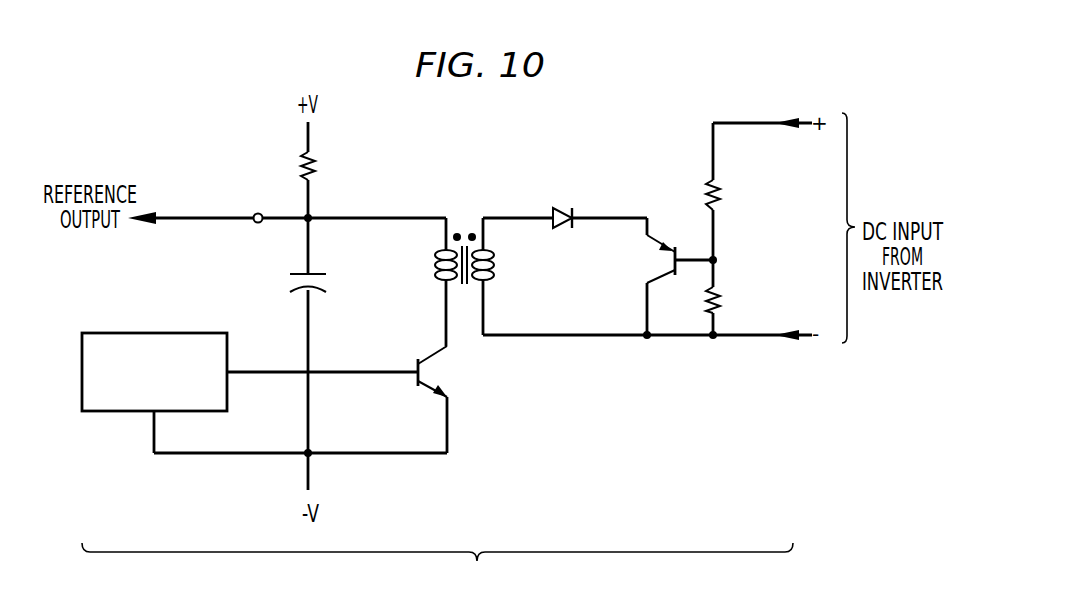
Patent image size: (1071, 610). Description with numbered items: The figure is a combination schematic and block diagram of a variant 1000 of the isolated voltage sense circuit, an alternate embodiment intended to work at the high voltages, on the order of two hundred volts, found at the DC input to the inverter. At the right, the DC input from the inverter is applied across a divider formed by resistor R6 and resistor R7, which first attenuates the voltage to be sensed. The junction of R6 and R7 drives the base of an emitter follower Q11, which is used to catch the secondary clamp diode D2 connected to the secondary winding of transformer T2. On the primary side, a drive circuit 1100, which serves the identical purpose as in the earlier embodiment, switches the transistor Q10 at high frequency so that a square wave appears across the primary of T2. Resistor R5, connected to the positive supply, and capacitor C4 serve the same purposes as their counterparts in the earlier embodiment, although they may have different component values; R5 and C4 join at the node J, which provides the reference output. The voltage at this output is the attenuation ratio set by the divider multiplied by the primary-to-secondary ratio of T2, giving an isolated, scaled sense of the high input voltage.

The variant of the isolated voltage sense circuit 1000 is at (437, 568).
The drive circuit 1100 is at (153, 333).
The resistor R5 is at (324, 166).
The resistor R6 is at (728, 195).
The resistor R7 is at (728, 301).
The capacitor C4 is at (294, 281).
The transformer T2 is at (465, 251).
The secondary clamp diode D2 is at (565, 201).
The transistor Q10 is at (445, 371).
The emitter follower Q11 is at (649, 259).
The node J is at (260, 203).